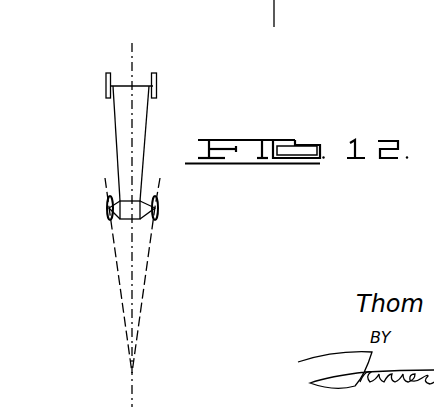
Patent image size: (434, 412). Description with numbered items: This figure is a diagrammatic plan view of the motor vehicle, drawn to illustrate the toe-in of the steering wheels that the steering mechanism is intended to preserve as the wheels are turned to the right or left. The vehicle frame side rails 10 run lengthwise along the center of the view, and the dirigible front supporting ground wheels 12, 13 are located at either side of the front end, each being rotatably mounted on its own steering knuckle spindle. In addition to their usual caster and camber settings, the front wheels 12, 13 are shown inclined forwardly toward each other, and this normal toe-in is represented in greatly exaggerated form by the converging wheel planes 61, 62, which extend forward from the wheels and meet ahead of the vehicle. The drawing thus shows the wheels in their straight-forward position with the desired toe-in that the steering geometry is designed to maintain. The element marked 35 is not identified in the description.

The mounting bracket 35 is at (132, 61).
The vehicle frame side rails 10 is at (150, 125).
The dirigible front supporting ground wheel 13 is at (107, 207).
The dirigible front supporting ground wheel 12 is at (158, 208).
The converging wheel plane 62 is at (114, 246).
The converging wheel plane 61 is at (148, 250).